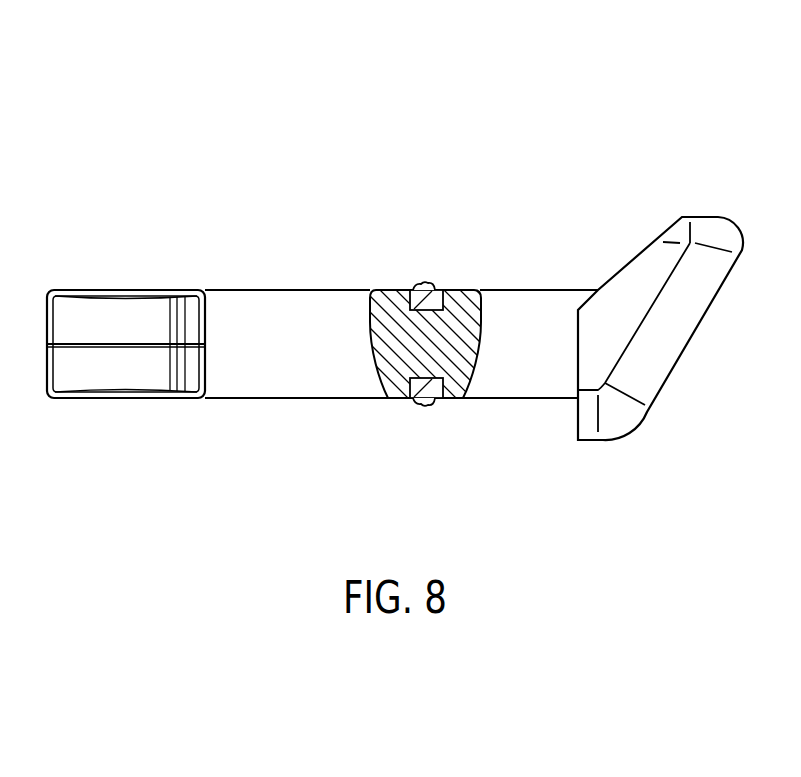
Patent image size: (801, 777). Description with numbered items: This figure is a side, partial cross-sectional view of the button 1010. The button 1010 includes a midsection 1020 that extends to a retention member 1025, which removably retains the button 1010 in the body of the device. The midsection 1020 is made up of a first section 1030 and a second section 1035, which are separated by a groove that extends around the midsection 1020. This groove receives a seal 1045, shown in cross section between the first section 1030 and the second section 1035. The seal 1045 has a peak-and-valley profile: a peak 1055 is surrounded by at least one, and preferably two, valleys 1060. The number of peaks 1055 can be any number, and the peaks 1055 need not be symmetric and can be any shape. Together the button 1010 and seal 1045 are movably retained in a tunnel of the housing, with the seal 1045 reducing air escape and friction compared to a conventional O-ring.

The button 1010 is at (416, 108).
The midsection 1020 is at (208, 268).
The retention member 1025 is at (112, 288).
The first section 1030 is at (240, 313).
The second section 1035 is at (540, 313).
The seal 1045 is at (429, 425).
The peak 1055 is at (425, 288).
The valley 1060 is at (408, 290).